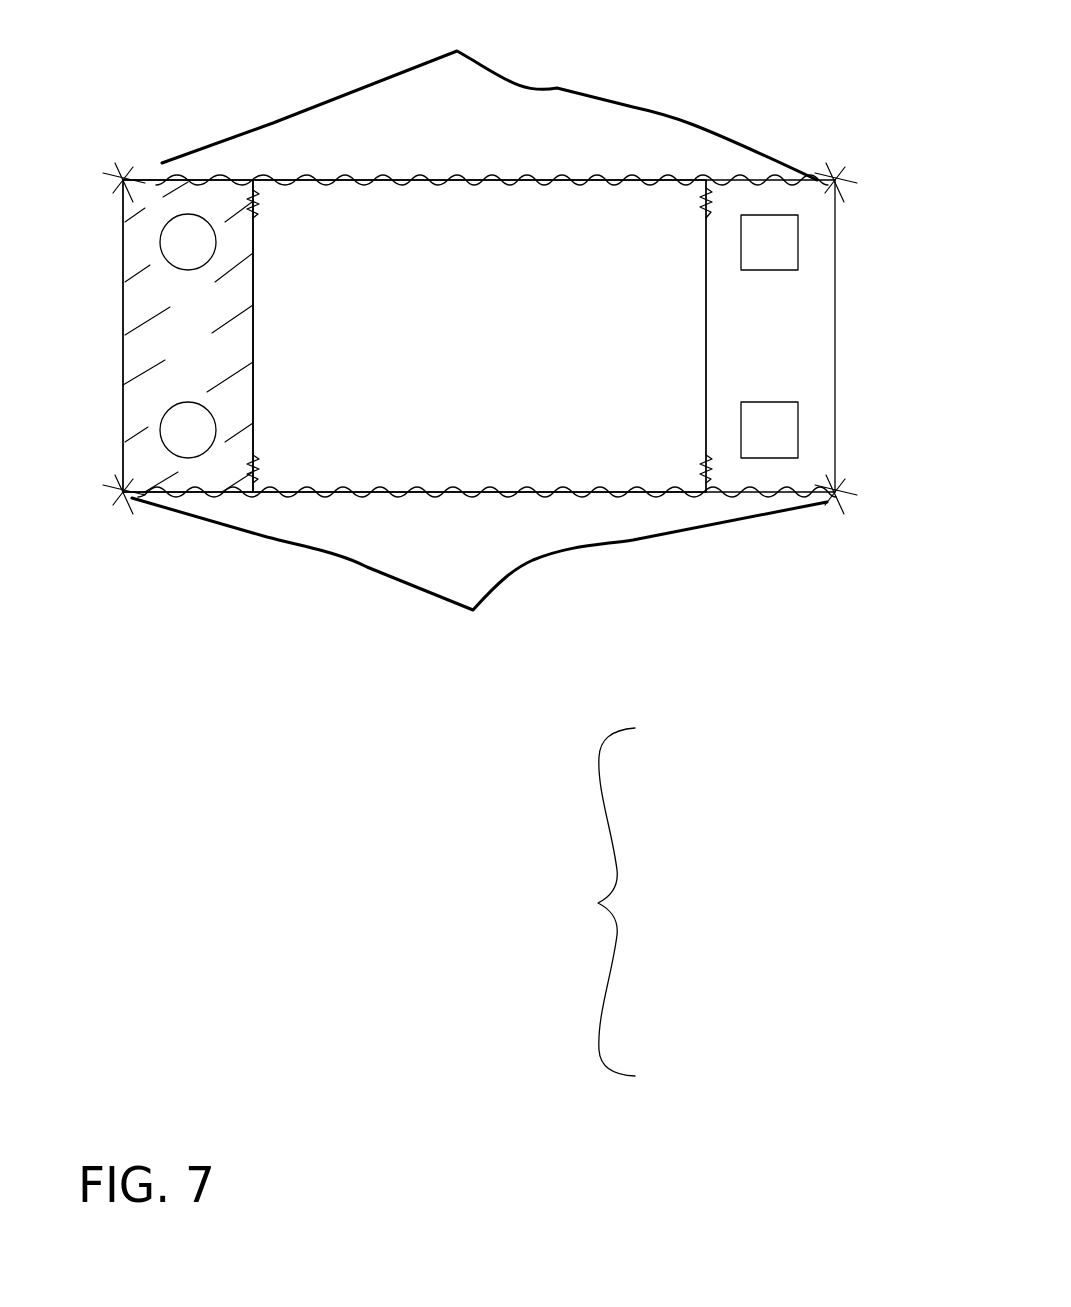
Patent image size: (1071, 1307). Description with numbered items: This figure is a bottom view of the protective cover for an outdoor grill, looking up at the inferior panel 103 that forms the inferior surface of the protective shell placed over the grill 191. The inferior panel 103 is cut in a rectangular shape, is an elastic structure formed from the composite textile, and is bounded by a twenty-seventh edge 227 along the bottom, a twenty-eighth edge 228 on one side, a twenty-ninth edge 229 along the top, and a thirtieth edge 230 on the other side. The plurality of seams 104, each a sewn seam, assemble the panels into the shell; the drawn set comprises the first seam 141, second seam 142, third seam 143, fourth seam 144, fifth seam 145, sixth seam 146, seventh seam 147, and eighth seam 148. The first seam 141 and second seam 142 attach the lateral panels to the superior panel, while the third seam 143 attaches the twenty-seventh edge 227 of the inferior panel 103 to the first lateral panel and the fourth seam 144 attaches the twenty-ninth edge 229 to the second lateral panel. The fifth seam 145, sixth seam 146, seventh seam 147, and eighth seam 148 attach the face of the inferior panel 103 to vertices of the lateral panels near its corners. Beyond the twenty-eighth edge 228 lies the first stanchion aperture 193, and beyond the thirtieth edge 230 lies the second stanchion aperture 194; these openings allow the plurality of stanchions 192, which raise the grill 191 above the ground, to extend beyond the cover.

The inferior panel 103 is at (573, 243).
The plurality of seams 104 is at (381, 547).
The first seam 141 is at (479, 581).
The second seam 142 is at (489, 93).
The third seam 143 is at (437, 495).
The fourth seam 144 is at (487, 140).
The fifth seam 145 is at (265, 465).
The sixth seam 146 is at (700, 467).
The seventh seam 147 is at (257, 207).
The eighth seam 148 is at (700, 212).
The grill 191 is at (167, 320).
The plurality of stanchions 192 is at (190, 277).
The first stanchion aperture 193 is at (123, 247).
The second stanchion aperture 194 is at (832, 347).
The twenty-seventh edge 227 is at (518, 492).
The twenty-eighth edge 228 is at (263, 332).
The twenty-ninth edge 229 is at (510, 185).
The thirtieth edge 230 is at (705, 338).